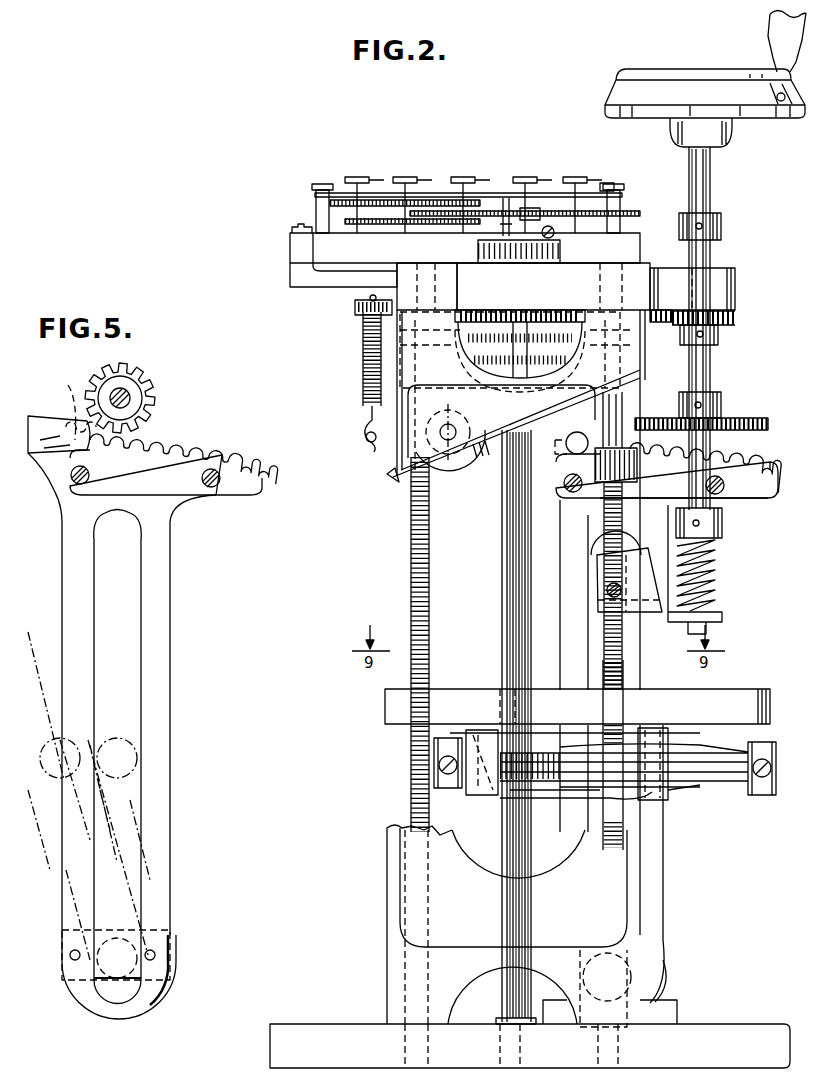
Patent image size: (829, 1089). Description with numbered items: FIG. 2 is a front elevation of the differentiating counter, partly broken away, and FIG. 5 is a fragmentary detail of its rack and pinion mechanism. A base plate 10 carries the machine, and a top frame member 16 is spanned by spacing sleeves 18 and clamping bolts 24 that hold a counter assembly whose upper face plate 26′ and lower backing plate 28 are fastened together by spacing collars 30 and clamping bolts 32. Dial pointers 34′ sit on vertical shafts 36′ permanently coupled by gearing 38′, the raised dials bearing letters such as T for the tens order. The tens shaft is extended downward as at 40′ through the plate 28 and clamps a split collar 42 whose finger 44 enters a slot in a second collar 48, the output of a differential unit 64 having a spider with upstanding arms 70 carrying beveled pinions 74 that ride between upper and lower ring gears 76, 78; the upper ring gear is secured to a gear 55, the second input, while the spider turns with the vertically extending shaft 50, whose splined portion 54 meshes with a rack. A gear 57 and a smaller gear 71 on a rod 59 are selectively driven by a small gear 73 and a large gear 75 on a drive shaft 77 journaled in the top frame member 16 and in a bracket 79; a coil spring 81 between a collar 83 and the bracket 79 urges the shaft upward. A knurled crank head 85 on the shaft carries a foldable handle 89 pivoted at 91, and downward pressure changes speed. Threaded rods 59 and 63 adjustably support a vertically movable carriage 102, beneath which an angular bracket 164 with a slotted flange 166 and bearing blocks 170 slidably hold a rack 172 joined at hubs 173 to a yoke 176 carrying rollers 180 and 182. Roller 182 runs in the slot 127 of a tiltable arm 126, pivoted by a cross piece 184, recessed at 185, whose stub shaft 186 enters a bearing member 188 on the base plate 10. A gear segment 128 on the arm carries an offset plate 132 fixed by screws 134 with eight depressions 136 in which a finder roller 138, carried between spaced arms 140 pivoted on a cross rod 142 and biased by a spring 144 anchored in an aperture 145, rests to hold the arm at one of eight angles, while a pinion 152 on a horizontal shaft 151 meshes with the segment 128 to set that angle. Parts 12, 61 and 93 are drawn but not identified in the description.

In FIG. 2, the base plate 10 is at (530, 1046).
In FIG. 2, the upright frame 12 is at (386, 870).
In FIG. 2, the top frame member 16 is at (735, 290).
In FIG. 2, the spacing sleeves 18 is at (290, 246).
In FIG. 2, the clamping bolts 24 is at (292, 228).
In FIG. 2, the upper face plate 26′ is at (490, 192).
In FIG. 2, the lower backing plate 28 is at (380, 238).
In FIG. 2, the spacing collars 30 is at (315, 208).
In FIG. 2, the clamping bolts 32 is at (618, 184).
In FIG. 2, the dial pointers 34′ is at (530, 180).
In FIG. 2, the vertical shaft 36′ is at (540, 213).
In FIG. 2, the gearing 38′ is at (568, 192).
In FIG. 2, the downward extension of tens shaft 40′ is at (520, 240).
In FIG. 2, the split collar 42 is at (570, 226).
In FIG. 2, the finger 44 is at (478, 258).
In FIG. 2, the second collar 48 is at (562, 256).
In FIG. 2, the vertically extending shaft 50 is at (501, 522).
In FIG. 2, the splined portion 54 is at (508, 556).
In FIG. 2, the gear 55 is at (540, 305).
In FIG. 2, the gear 57 is at (662, 323).
In FIG. 2, the rod 59 is at (628, 394).
In FIG. 2, the ring gear 61 is at (486, 308).
In FIG. 2, the rod 63 is at (410, 585).
In FIG. 2, the differential unit 64 is at (503, 366).
In FIG. 2, the upstanding arms 70 is at (424, 395).
In FIG. 2, the second driving gear 71 is at (594, 460).
In FIG. 2, the small gear 73 is at (729, 318).
In FIG. 2, the beveled pinion 74 is at (455, 326).
In FIG. 2, the large gear 75 is at (749, 422).
In FIG. 2, the upper ring gear 76 is at (592, 330).
In FIG. 2, the drive shaft 77 is at (711, 372).
In FIG. 2, the lower ring gear 78 is at (540, 366).
In FIG. 2, the bracket 79 is at (626, 571).
In FIG. 2, the coil spring 81 is at (715, 575).
In FIG. 2, the collar 83 is at (723, 530).
In FIG. 2, the knurled crank head 85 is at (619, 93).
In FIG. 2, the foldable handle 89 is at (773, 39).
In FIG. 2, the pivot 91 is at (779, 102).
In FIG. 2, the collar 93 is at (721, 223).
In FIG. 2, the carriage 102 is at (748, 705).
In FIG. 2, the tiltable arm 126 is at (664, 835).
In FIG. 5, the tiltable arm 126 is at (170, 594).
In FIG. 2, the slot 127 is at (632, 676).
In FIG. 5, the slot 127 is at (140, 644).
In FIG. 2, the gear segment 128 is at (762, 492).
In FIG. 5, the gear segment 128 is at (257, 492).
In FIG. 2, the offset plate 132 is at (667, 476).
In FIG. 5, the offset plate 132 is at (166, 472).
In FIG. 2, the screws 134 is at (565, 488).
In FIG. 5, the screws 134 is at (202, 470).
In FIG. 2, the depressions 136 is at (704, 467).
In FIG. 5, the depressions 136 is at (183, 458).
In FIG. 2, the finder roller 138 is at (594, 430).
In FIG. 5, the finder roller 138 is at (66, 386).
In FIG. 2, the spaced arms 140 is at (484, 462).
In FIG. 5, the spaced arms 140 is at (66, 420).
In FIG. 2, the cross rod 142 is at (452, 418).
In FIG. 2, the spring 144 is at (362, 338).
In FIG. 2, the aperture 145 is at (375, 446).
In FIG. 5, the horizontal shaft 151 is at (130, 398).
In FIG. 5, the pinion 152 is at (148, 372).
In FIG. 2, the angular bracket 164 is at (555, 808).
In FIG. 2, the flange 166 is at (492, 805).
In FIG. 2, the bearing blocks 170 is at (660, 758).
In FIG. 2, the rack member 172 is at (688, 786).
In FIG. 2, the hubs 173 is at (450, 790).
In FIG. 2, the yoke member 176 is at (576, 788).
In FIG. 2, the roller 180 is at (605, 740).
In FIG. 2, the roller 182 is at (600, 720).
In FIG. 2, the cross piece 184 is at (668, 978).
In FIG. 5, the cross piece 184 is at (168, 955).
In FIG. 5, the recess 185 is at (140, 965).
In FIG. 2, the stub shaft 186 is at (590, 944).
In FIG. 5, the stub shaft 186 is at (128, 920).
In FIG. 2, the bearing member 188 is at (678, 1008).
In FIG. 2, the tens dial label T is at (768, 466).
In FIG. 5, the tens dial label T is at (258, 450).